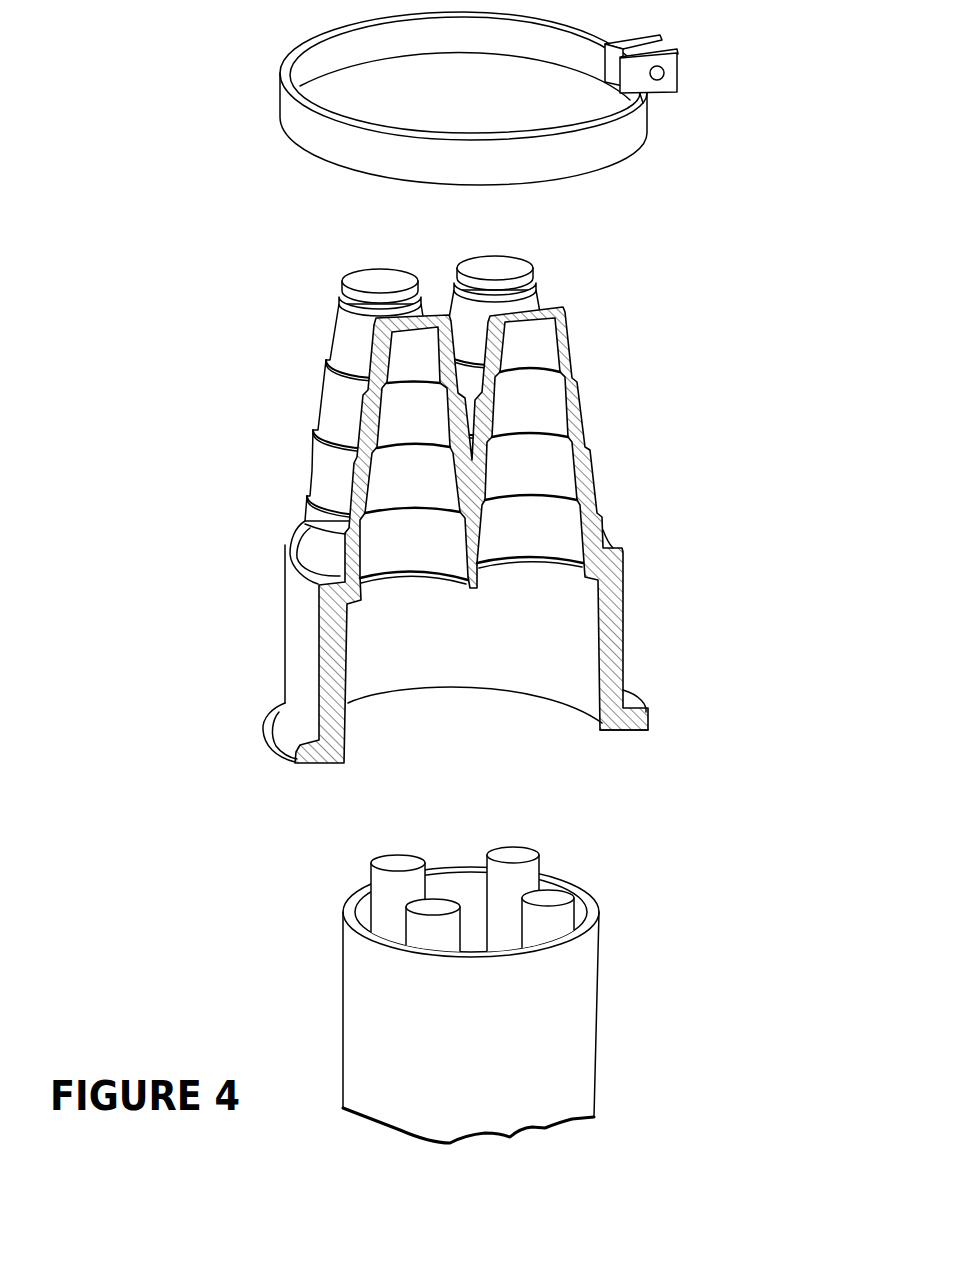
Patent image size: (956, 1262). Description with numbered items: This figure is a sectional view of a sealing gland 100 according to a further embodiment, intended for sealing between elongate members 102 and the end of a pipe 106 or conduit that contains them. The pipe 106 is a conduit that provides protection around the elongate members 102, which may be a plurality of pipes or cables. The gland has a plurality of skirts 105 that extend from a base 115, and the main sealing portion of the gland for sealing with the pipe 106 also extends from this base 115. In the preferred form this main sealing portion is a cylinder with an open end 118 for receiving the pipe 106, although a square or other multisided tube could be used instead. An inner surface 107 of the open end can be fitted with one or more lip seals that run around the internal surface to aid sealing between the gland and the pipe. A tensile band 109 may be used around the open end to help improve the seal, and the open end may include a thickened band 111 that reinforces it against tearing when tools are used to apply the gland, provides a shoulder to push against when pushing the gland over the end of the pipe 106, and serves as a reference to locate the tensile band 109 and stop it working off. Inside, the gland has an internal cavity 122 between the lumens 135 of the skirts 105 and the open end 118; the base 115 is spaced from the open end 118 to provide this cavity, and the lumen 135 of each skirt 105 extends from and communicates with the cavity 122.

The sealing gland 100 is at (712, 256).
The elongate members 102 is at (383, 877).
The skirts 105 is at (333, 397).
The pipe 106 is at (477, 995).
The inner surface 107 is at (586, 631).
The tensile band 109 is at (330, 142).
The thickened band 111 is at (645, 714).
The base 115 is at (610, 528).
The open end 118 is at (612, 726).
The internal cavity 122 is at (470, 656).
The lumen 135 is at (533, 417).